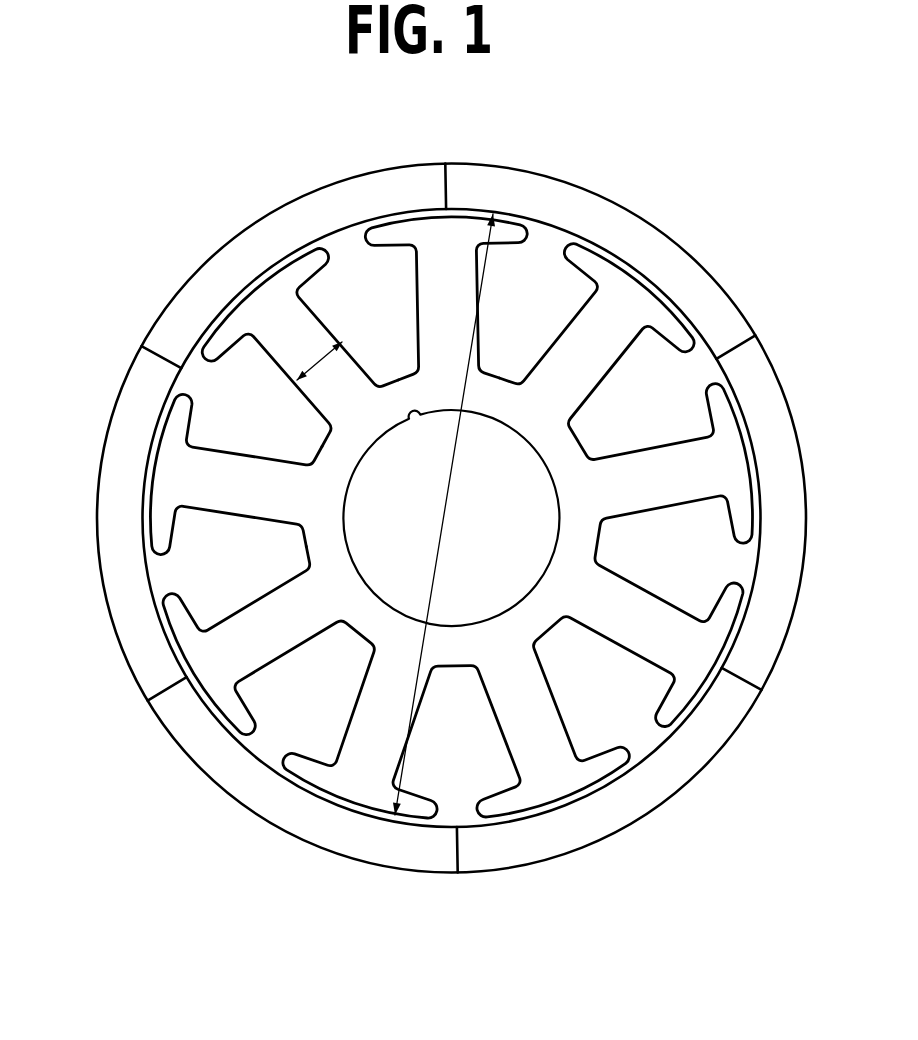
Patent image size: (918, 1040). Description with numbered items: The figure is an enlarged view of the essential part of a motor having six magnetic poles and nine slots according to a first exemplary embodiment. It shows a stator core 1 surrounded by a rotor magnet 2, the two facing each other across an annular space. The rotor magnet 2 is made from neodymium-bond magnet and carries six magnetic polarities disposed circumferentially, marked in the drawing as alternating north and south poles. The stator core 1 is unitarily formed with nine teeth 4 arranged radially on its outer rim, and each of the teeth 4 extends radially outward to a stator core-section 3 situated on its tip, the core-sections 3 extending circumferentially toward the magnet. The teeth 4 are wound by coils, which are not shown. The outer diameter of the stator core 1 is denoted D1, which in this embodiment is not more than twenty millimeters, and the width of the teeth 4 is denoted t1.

The stator core 1 is at (532, 412).
The rotor-magnet 2 is at (718, 312).
The stator core-section 3 is at (430, 233).
The teeth 4 is at (233, 470).
The outer diameter of stator core D1 is at (439, 514).
The width of teeth t1 is at (314, 351).